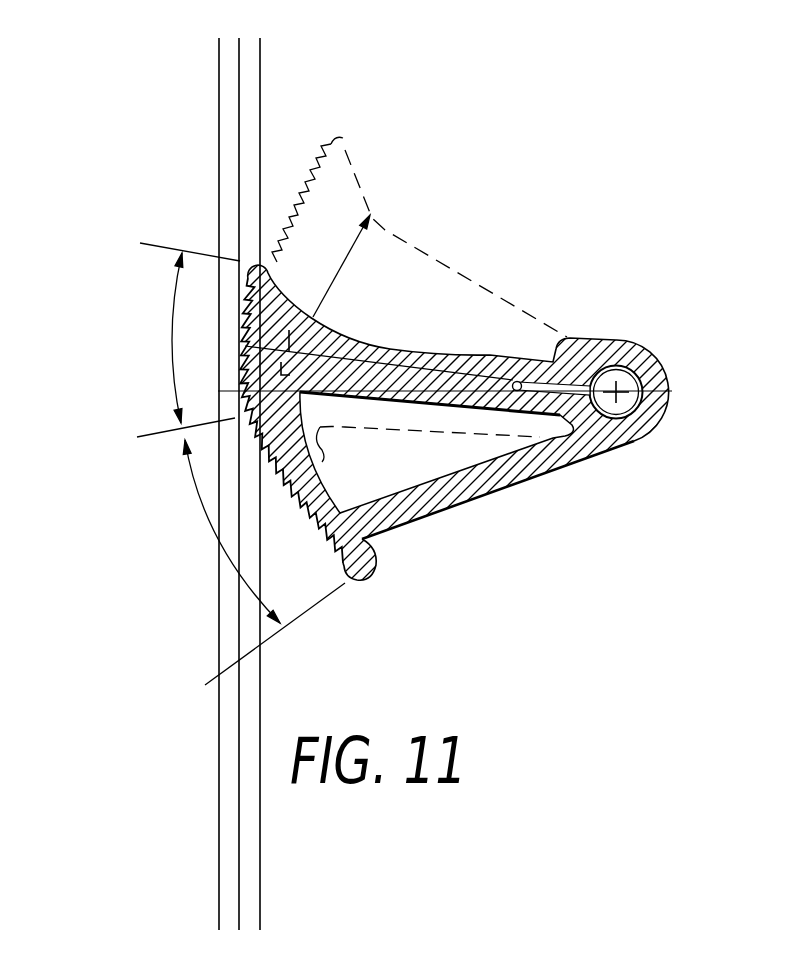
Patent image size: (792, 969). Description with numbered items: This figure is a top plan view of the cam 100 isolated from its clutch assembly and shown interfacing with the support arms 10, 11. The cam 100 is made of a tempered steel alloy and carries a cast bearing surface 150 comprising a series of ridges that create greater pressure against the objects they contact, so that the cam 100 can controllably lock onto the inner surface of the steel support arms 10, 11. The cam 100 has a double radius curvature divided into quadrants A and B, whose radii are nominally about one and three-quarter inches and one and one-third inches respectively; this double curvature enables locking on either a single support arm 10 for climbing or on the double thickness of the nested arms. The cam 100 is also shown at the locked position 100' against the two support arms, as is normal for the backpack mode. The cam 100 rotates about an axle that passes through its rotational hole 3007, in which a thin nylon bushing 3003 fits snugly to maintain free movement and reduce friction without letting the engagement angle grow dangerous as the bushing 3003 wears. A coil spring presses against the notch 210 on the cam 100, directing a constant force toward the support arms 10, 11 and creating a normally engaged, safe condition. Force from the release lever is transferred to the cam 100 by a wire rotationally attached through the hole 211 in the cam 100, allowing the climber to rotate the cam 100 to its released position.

The support arm 10 is at (227, 175).
The support arm 11 is at (250, 128).
The cam 100 is at (396, 422).
The locked position of cam 100' is at (419, 237).
The cast bearing surface 150 is at (307, 537).
The notch 210 is at (553, 360).
The hole 211 is at (520, 383).
The nylon bushing 3003 is at (625, 389).
The rotational hole 3007 is at (655, 358).
The quadrant A is at (188, 340).
The quadrant B is at (264, 562).